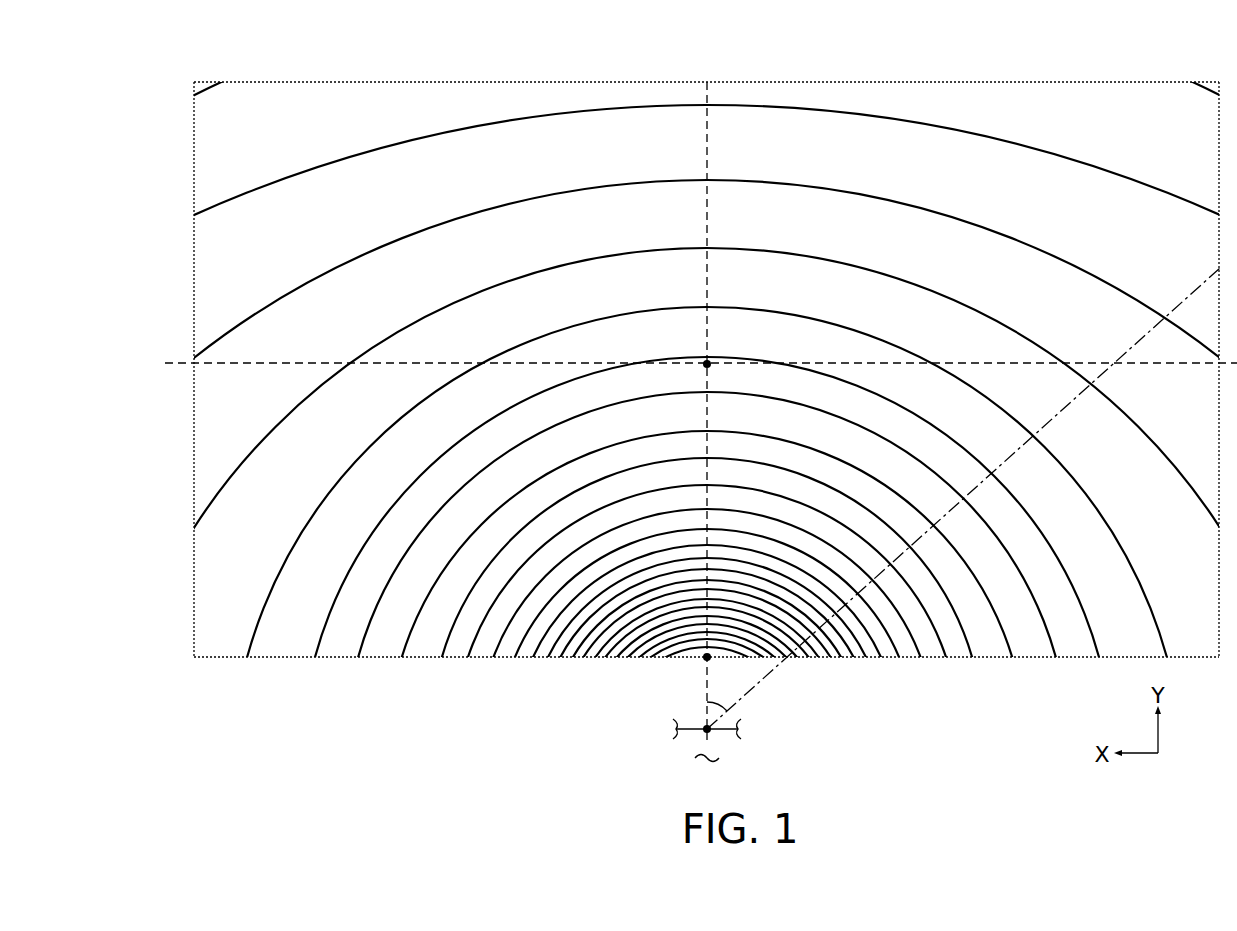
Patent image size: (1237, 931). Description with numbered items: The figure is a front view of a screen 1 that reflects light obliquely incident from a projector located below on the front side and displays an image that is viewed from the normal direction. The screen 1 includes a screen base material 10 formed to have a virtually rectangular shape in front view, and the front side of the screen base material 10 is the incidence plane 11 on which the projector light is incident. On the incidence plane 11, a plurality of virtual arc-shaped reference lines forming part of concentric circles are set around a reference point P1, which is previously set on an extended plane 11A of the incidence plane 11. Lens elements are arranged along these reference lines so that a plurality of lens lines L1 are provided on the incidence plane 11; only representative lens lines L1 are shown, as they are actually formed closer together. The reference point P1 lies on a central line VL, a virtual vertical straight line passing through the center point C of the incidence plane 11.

The screen 1 is at (618, 465).
The screen base material 10 is at (618, 465).
The incidence plane 11 is at (898, 96).
The extended plane 11A is at (527, 727).
The lens lines L1 is at (1108, 170).
The center point C is at (709, 362).
The reference point P1 is at (712, 735).
The central line VL is at (712, 95).